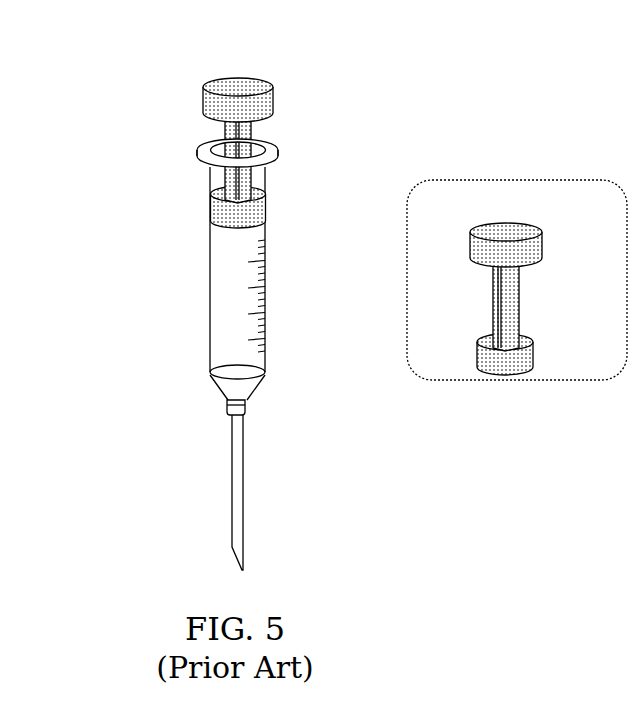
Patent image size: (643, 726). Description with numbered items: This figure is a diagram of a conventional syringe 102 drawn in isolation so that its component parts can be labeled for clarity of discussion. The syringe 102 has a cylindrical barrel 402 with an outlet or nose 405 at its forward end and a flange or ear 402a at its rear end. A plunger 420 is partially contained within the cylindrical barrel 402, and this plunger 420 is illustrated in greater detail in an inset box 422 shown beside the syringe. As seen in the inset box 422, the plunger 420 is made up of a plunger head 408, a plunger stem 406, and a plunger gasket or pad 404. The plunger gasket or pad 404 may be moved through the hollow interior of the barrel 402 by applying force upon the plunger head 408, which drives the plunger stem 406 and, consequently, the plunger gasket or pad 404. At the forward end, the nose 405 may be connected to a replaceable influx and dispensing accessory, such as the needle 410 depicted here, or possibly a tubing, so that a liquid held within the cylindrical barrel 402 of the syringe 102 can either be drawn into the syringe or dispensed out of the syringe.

The syringe 102 is at (100, 31).
The cylindrical barrel 402 is at (210, 250).
The flange or ear 402a is at (197, 151).
The plunger gasket or pad 404 is at (255, 212).
The outlet or nose 405 is at (247, 408).
The plunger stem 406 is at (255, 132).
The plunger head 408 is at (270, 85).
The needle 410 is at (243, 495).
The plunger 420 is at (190, 128).
The inset box 422 is at (521, 180).